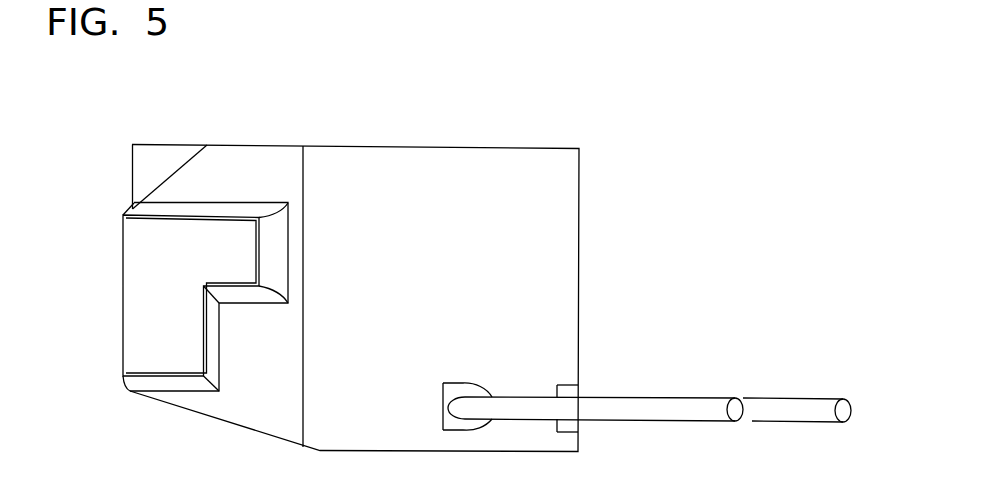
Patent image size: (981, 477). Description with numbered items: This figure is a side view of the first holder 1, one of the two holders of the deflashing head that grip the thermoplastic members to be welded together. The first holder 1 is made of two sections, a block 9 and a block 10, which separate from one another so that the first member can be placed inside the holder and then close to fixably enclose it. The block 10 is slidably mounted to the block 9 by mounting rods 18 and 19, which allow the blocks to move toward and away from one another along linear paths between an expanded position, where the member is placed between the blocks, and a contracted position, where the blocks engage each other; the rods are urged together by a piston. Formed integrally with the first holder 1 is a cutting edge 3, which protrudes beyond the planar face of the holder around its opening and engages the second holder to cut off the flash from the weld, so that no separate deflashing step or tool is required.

The first holder 1 is at (630, 90).
The cutting edge 3 is at (155, 373).
The block 9 is at (143, 163).
The block 10 is at (412, 170).
The mounting rod 18 is at (652, 410).
The mounting rod 19 is at (805, 410).